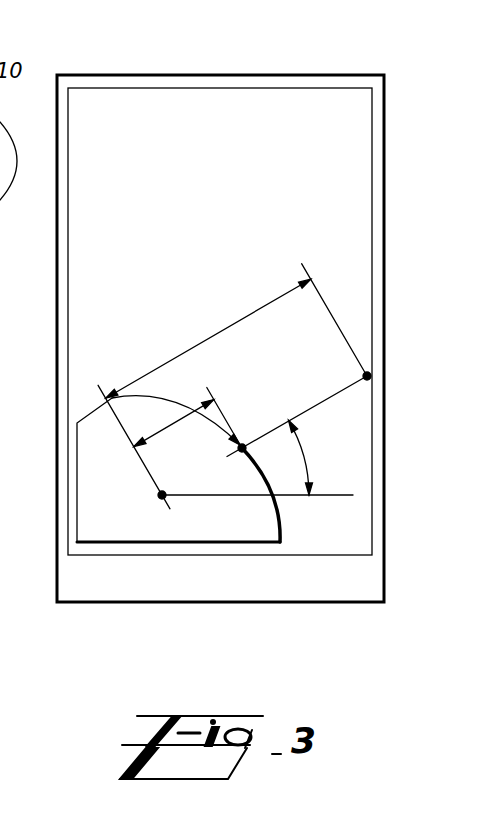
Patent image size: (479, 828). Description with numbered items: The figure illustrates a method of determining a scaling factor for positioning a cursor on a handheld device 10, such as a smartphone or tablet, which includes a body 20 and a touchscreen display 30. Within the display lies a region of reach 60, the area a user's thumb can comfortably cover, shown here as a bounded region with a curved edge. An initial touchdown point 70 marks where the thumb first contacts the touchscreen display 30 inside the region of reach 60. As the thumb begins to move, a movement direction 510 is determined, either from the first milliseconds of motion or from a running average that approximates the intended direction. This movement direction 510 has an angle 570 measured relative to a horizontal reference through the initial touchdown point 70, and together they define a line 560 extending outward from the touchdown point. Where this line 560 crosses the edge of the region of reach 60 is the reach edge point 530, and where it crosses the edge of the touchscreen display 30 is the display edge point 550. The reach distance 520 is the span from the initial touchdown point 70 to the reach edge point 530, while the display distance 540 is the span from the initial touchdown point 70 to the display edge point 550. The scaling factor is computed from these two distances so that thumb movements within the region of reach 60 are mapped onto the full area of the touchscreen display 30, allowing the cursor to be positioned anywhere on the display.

The device 10 is at (400, 143).
The body 20 is at (85, 579).
The touchscreen display 30 is at (118, 128).
The region of reach 60 is at (282, 513).
The initial touchdown point 70 is at (165, 500).
The movement direction 510 is at (200, 470).
The reach distance 520 is at (204, 412).
The reach edge point 530 is at (242, 448).
The display distance 540 is at (236, 331).
The display edge point 550 is at (367, 376).
The line 560 is at (333, 394).
The angle 570 is at (305, 457).